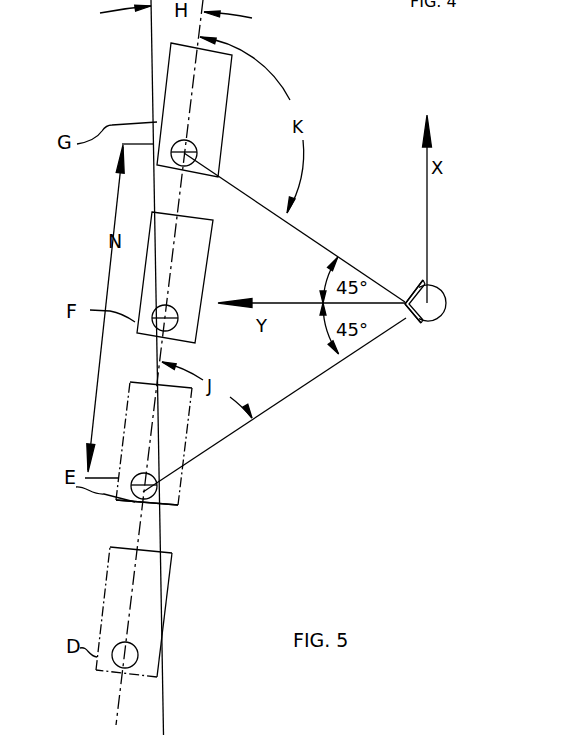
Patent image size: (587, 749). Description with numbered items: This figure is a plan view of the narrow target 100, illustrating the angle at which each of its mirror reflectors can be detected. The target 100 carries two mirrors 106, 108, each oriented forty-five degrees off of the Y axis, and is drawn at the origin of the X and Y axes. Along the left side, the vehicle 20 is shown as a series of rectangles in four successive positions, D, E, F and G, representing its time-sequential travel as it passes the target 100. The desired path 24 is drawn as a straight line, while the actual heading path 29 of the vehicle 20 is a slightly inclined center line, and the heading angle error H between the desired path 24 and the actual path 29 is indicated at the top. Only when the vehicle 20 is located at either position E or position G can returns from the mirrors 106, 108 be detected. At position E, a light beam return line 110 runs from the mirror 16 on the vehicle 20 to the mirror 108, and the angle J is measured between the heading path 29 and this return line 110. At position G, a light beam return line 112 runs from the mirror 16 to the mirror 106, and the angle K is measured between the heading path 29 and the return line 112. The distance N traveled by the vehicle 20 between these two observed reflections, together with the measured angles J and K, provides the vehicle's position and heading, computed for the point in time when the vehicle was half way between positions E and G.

The mirror 16 is at (183, 507).
The vehicle 20 is at (220, 167).
The desired path 24 is at (164, 709).
The actual path 29 is at (115, 713).
The target 100 is at (447, 300).
The mirror 106 is at (423, 283).
The mirror 108 is at (421, 325).
The light beam return line 110 is at (328, 371).
The light beam return line 112 is at (370, 265).